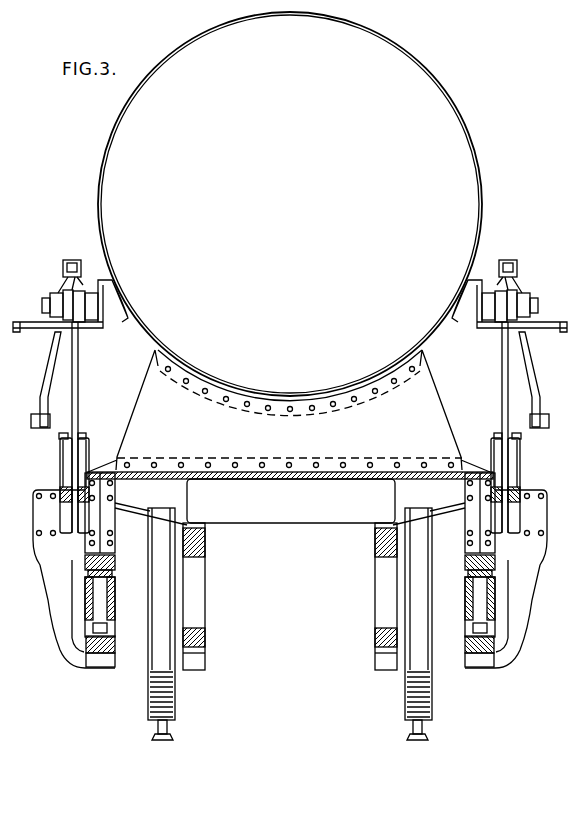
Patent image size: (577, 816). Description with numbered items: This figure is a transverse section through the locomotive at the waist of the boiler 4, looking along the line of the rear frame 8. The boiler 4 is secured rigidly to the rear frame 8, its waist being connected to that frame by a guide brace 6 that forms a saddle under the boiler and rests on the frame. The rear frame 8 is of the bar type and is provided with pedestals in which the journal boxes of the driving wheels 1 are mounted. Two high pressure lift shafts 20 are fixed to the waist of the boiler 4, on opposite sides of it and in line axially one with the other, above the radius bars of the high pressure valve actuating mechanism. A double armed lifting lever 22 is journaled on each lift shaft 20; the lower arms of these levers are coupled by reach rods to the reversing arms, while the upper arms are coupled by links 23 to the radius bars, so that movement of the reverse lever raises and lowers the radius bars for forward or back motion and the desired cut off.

The driving wheels 1 is at (288, 624).
The boiler 4 is at (290, 204).
The guide brace 6 is at (290, 414).
The rear frame 8 is at (290, 596).
The high pressure lift shafts 20 is at (37, 309).
The double armed lifting lever 22 is at (47, 374).
The links 23 is at (77, 401).